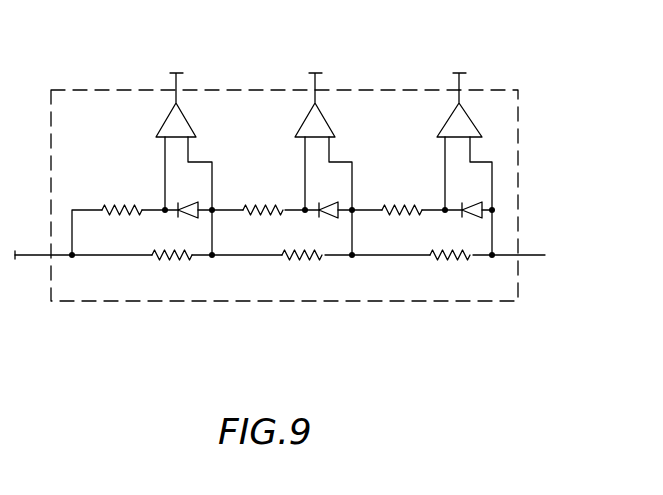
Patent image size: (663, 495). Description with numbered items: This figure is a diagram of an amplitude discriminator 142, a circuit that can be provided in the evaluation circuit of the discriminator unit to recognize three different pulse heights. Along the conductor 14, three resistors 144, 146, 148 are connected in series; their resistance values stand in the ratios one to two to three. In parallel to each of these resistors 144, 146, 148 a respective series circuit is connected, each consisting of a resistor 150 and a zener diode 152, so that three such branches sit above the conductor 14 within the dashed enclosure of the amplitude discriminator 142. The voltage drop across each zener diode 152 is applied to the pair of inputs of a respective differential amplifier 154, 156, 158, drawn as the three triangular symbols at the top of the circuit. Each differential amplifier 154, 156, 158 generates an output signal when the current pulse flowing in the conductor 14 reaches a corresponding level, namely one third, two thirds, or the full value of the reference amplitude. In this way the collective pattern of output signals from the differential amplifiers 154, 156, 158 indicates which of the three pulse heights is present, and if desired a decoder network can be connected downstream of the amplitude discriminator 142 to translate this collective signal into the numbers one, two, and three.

The conductor 14 is at (95, 257).
The amplitude discriminator 142 is at (522, 133).
The resistor 144 is at (176, 257).
The resistor 146 is at (304, 257).
The resistor 148 is at (452, 257).
The resistor 150 is at (115, 202).
The zener diode 152 is at (193, 200).
The differential amplifier 154 is at (168, 120).
The differential amplifier 156 is at (308, 118).
The differential amplifier 158 is at (452, 118).